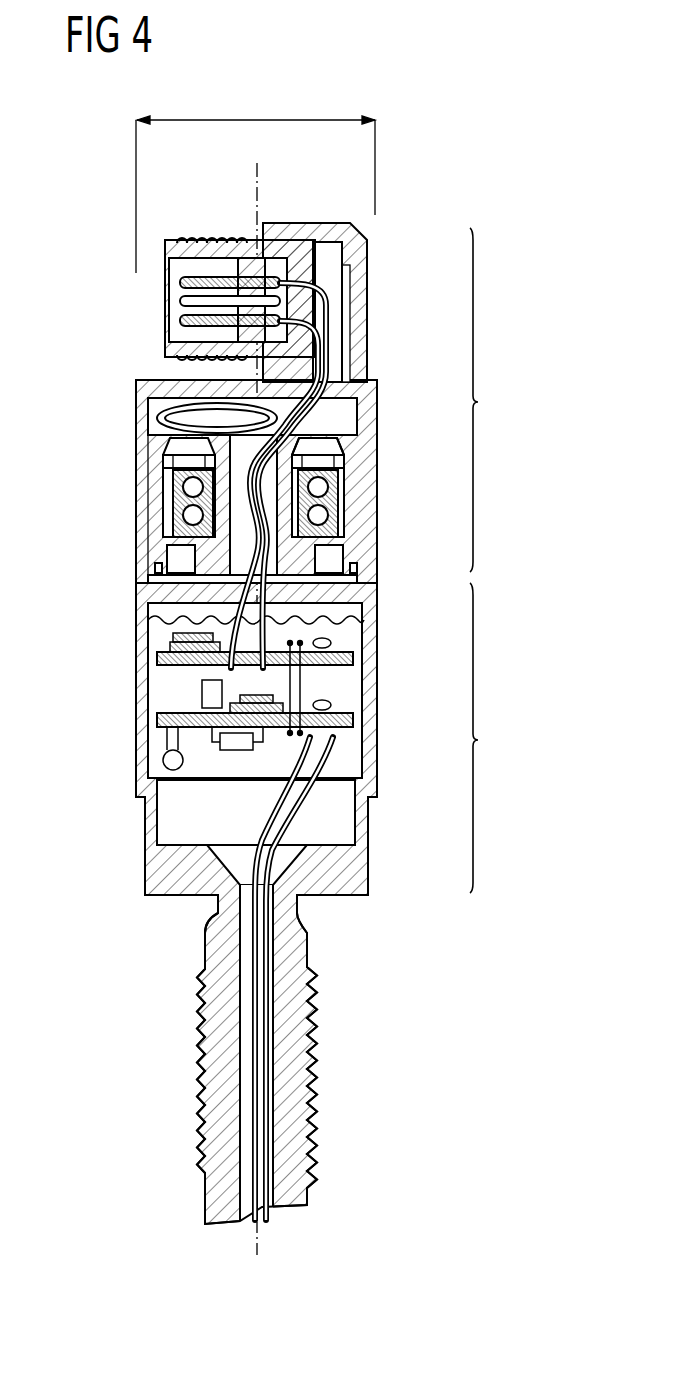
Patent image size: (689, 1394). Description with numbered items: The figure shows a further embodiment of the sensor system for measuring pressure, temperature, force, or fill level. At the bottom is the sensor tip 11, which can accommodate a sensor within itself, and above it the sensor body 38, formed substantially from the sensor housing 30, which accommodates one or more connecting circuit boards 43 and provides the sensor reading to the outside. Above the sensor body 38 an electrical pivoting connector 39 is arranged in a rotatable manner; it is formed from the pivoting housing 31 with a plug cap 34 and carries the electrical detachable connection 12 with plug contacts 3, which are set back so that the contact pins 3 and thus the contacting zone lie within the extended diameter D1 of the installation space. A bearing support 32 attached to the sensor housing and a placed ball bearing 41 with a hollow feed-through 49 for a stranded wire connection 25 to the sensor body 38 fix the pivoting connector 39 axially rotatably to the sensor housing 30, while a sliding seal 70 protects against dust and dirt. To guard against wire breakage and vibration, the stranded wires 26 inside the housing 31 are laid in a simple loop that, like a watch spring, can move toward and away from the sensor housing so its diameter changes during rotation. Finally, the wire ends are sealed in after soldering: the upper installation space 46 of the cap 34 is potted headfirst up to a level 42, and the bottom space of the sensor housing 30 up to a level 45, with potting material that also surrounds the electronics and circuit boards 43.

The plug contacts 3 is at (167, 278).
The sensor tip 11 is at (300, 1020).
The electrical detachable connection 12 is at (206, 240).
The stranded wire connection 25 is at (348, 555).
The stranded wires 26 is at (325, 415).
The sensor housing 30 is at (137, 658).
The pivoting housing 31 is at (143, 442).
The bearing support 32 is at (185, 540).
The plug cap 34 is at (360, 229).
The sensor body 38 is at (492, 738).
The pivoting connector 39 is at (492, 400).
The ball bearing 41 is at (318, 487).
The level 42 is at (356, 358).
The connecting circuit boards 43 is at (352, 672).
The level 45 is at (157, 613).
The upper installation space 46 is at (330, 273).
The hollow feed-through 49 is at (305, 500).
The sliding seal 70 is at (140, 545).
The extended diameter D1 is at (257, 120).